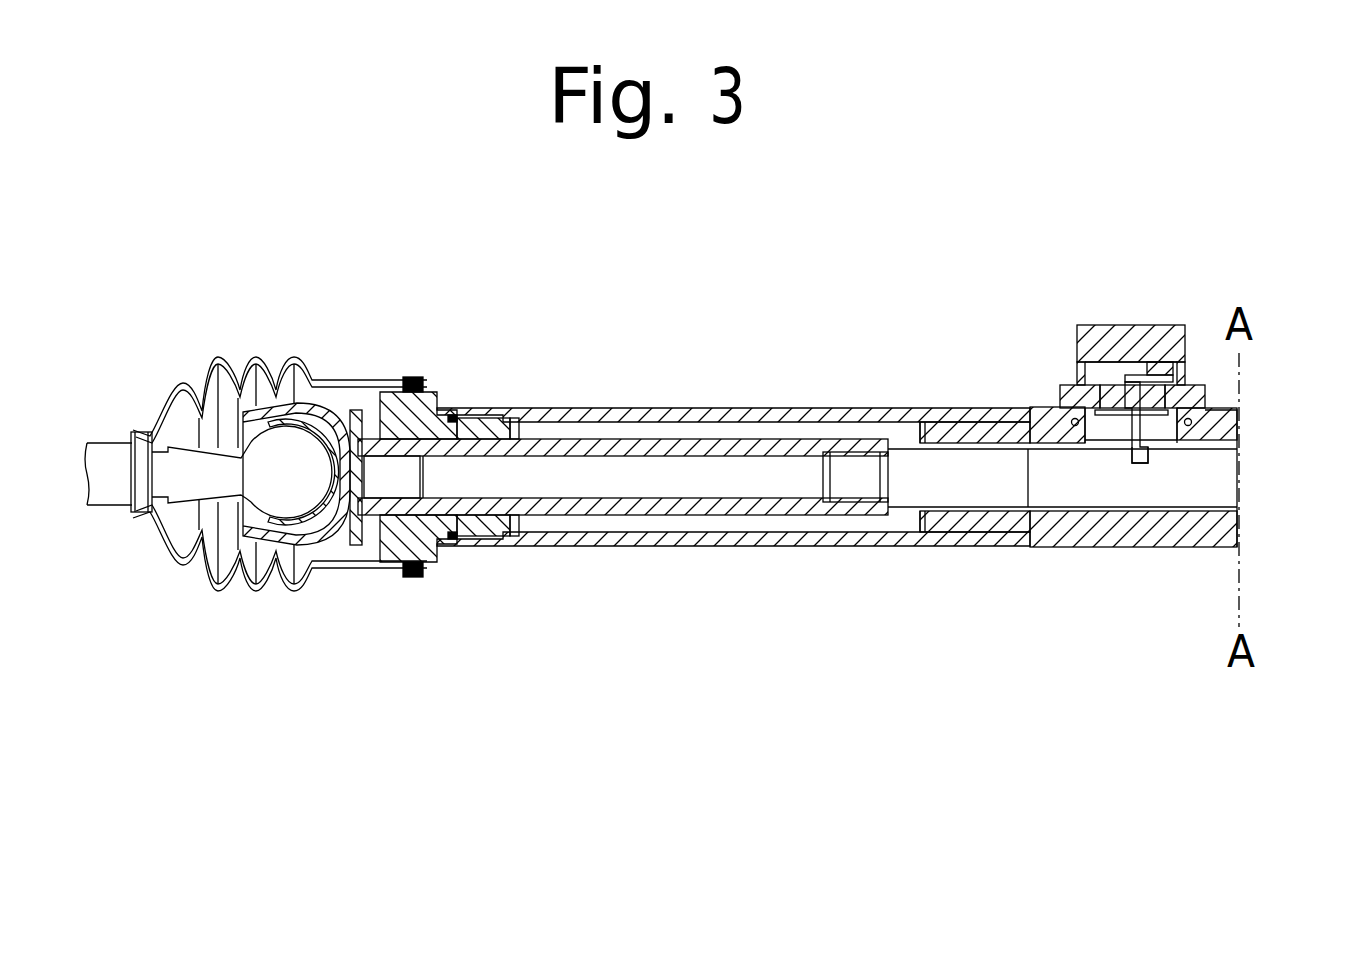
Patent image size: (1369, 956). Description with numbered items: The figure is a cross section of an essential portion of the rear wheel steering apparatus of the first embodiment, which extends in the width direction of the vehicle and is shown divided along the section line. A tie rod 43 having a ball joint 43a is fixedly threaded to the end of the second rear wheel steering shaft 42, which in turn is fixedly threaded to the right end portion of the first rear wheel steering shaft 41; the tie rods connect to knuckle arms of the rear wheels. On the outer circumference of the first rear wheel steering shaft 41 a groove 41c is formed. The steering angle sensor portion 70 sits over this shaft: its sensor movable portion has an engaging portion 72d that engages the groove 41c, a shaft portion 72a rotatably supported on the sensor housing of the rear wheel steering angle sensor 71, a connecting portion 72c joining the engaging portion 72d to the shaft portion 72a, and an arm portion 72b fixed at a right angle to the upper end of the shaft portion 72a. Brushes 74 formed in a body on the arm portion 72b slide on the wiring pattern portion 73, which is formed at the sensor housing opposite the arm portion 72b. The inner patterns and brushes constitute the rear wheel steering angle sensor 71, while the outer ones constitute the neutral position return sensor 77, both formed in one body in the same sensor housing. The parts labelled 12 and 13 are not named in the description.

The outer tube 12 is at (674, 408).
The tube end 13 is at (1235, 425).
The first rear wheel steering shaft 41 is at (1078, 503).
The groove 41c is at (1158, 448).
The second rear wheel steering shaft 42 is at (583, 512).
The tie rod 43 is at (108, 450).
The ball joint 43a is at (279, 448).
The steering angle sensor portion 70 is at (1113, 318).
The rear wheel steering angle sensor 71 is at (1108, 368).
The neutral position return sensor 77 is at (1066, 294).
The shaft portion 72a is at (1073, 392).
The arm portion 72b is at (1197, 385).
The connecting portion 72c is at (1125, 397).
The engaging portion 72d is at (1146, 465).
The wiring pattern portion 73 is at (1134, 372).
The brushes 74 is at (1160, 395).